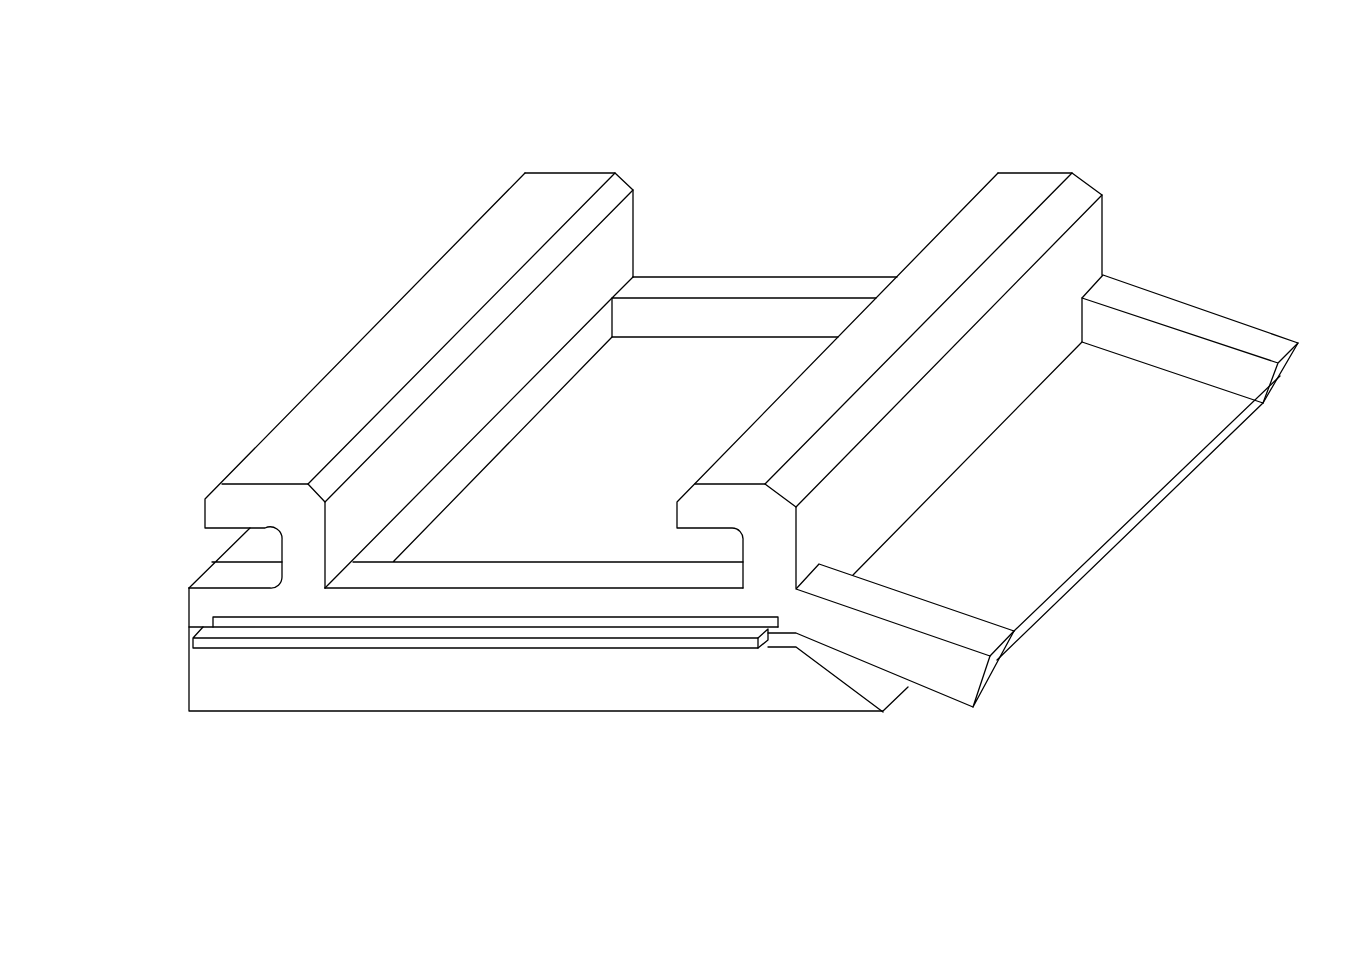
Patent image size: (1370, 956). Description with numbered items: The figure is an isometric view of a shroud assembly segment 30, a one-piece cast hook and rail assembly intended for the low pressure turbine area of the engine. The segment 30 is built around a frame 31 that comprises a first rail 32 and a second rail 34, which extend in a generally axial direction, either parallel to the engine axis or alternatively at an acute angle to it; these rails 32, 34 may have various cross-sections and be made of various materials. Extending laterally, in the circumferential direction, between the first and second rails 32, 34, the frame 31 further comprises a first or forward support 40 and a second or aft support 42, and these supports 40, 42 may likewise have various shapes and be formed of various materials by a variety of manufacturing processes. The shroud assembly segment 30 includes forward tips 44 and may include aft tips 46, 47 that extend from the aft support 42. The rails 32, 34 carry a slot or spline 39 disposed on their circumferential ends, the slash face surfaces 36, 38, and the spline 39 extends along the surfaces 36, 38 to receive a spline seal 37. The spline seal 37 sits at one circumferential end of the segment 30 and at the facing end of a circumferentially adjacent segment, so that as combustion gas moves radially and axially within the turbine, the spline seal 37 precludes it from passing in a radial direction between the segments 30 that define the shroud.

The shroud assembly segment 30 is at (952, 120).
The frame 31 is at (291, 340).
The first rail 32 is at (465, 572).
The second rail 34 is at (695, 283).
The slash face surface 36 is at (580, 602).
The spline seal 37 is at (210, 645).
The slash face surface 38 is at (845, 275).
The spline 39 is at (762, 617).
The forward support 40 is at (410, 310).
The aft support 42 is at (1090, 230).
The forward tips 44 is at (195, 565).
The aft tip 46 is at (995, 665).
The aft tip 47 is at (1265, 320).